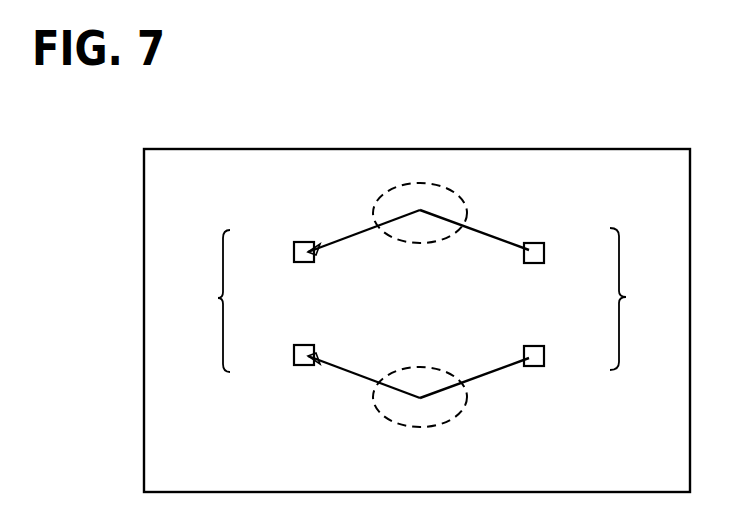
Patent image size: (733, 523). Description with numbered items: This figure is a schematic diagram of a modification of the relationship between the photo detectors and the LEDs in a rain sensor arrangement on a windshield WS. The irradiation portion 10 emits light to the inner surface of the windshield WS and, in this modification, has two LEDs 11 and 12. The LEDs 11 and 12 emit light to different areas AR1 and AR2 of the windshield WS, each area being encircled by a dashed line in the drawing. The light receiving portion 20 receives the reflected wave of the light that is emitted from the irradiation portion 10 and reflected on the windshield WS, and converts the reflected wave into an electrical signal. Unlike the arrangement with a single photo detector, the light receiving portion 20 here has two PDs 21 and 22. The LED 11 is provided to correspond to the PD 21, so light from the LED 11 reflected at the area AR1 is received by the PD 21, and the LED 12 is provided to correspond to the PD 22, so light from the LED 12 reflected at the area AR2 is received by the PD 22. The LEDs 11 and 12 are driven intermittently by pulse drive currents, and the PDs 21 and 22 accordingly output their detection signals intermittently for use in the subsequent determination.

The windshield WS is at (600, 148).
The area AR1 is at (415, 245).
The area AR2 is at (413, 429).
The irradiation portion 10 is at (639, 299).
The LED 11 is at (547, 253).
The LED 12 is at (547, 356).
The light receiving portion 20 is at (207, 301).
The PD 21 is at (292, 252).
The PD 22 is at (292, 355).